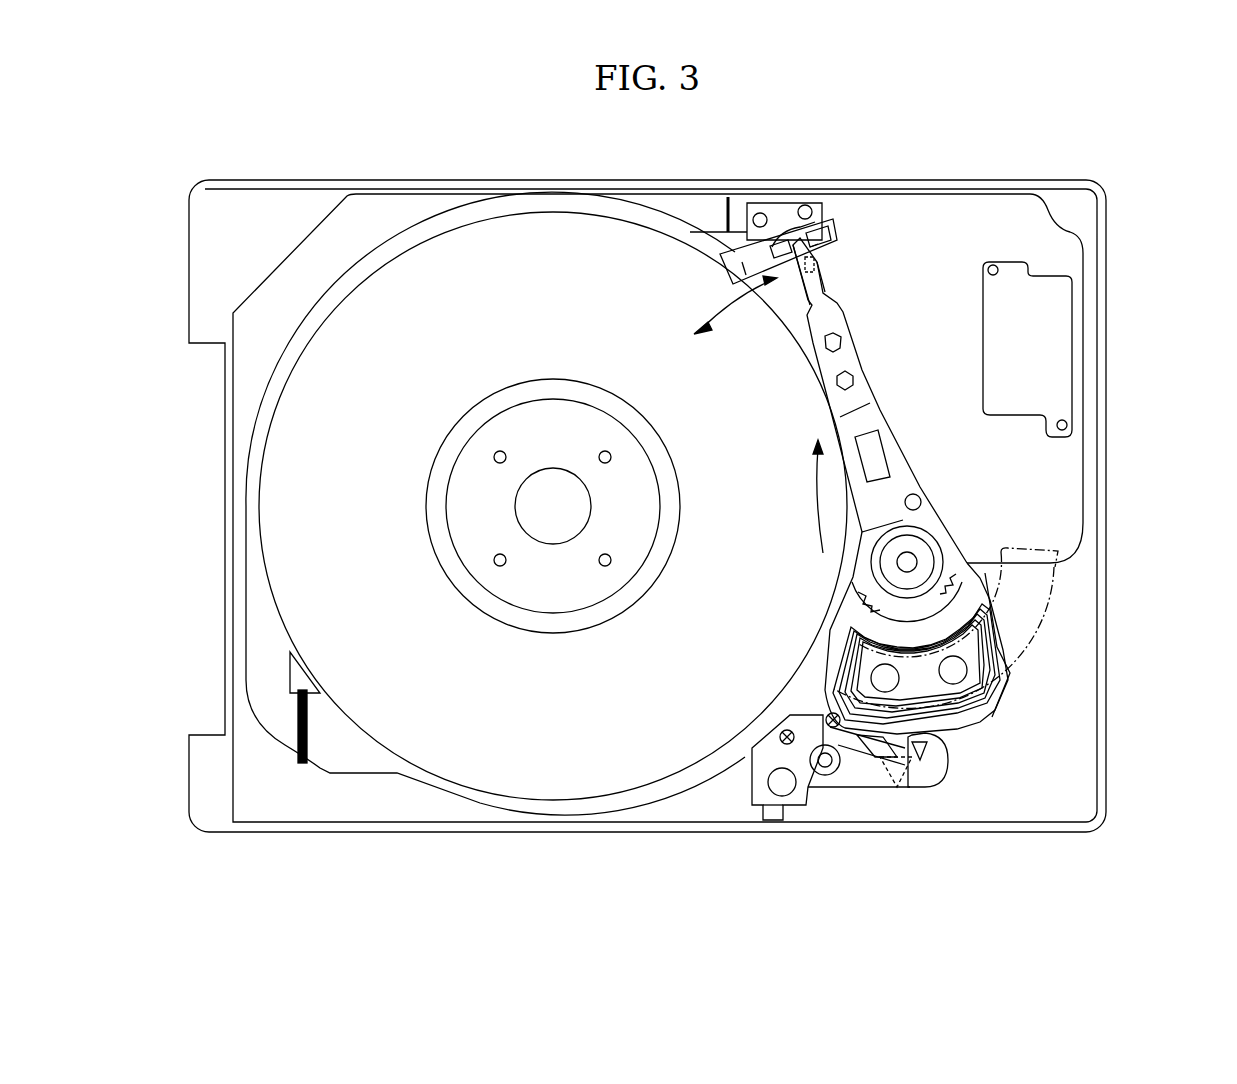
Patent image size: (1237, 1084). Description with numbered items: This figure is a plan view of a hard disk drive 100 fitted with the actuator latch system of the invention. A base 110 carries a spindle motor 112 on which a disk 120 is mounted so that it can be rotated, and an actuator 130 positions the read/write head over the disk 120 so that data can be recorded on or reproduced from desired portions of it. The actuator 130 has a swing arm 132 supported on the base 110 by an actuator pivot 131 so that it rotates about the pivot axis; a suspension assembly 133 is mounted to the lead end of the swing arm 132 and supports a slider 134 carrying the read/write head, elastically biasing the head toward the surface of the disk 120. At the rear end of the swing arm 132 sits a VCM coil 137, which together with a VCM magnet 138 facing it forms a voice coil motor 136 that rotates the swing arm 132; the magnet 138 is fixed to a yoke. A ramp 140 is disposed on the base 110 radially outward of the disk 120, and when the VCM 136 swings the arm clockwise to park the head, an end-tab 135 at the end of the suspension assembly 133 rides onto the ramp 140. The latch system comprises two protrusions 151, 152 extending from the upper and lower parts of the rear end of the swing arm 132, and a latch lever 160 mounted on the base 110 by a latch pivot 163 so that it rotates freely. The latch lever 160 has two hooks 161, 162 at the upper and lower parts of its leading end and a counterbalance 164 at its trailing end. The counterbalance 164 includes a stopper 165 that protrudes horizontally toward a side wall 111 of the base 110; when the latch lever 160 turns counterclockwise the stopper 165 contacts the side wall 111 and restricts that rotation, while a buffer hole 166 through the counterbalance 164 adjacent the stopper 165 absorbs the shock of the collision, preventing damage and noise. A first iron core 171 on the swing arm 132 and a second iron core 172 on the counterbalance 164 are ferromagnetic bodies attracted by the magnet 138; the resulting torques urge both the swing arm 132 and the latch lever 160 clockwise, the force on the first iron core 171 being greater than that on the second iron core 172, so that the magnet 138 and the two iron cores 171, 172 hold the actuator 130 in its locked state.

The hard disk drive 100 is at (1136, 194).
The base 110 is at (468, 823).
The side wall 111 is at (641, 832).
The spindle motor 112 is at (468, 478).
The disk 120 is at (512, 240).
The actuator 130 is at (912, 483).
The actuator pivot 131 is at (918, 560).
The swing arm 132 is at (893, 446).
The suspension assembly 133 is at (830, 296).
The slider 134 is at (816, 263).
The end-tab 135 is at (807, 252).
The voice coil motor 136 is at (1031, 632).
The VCM coil 137 is at (1003, 680).
The VCM magnet 138 is at (1055, 600).
The ramp 140 is at (752, 246).
The protrusion 151 is at (900, 785).
The protrusion 152 is at (873, 752).
The latch lever 160 is at (853, 771).
The hook 161 is at (920, 790).
The hook 162 is at (950, 755).
The latch pivot 163 is at (823, 765).
The counterbalance 164 is at (757, 768).
The stopper 165 is at (772, 818).
The buffer hole 166 is at (784, 788).
The first iron core 171 is at (832, 718).
The second iron core 172 is at (787, 737).